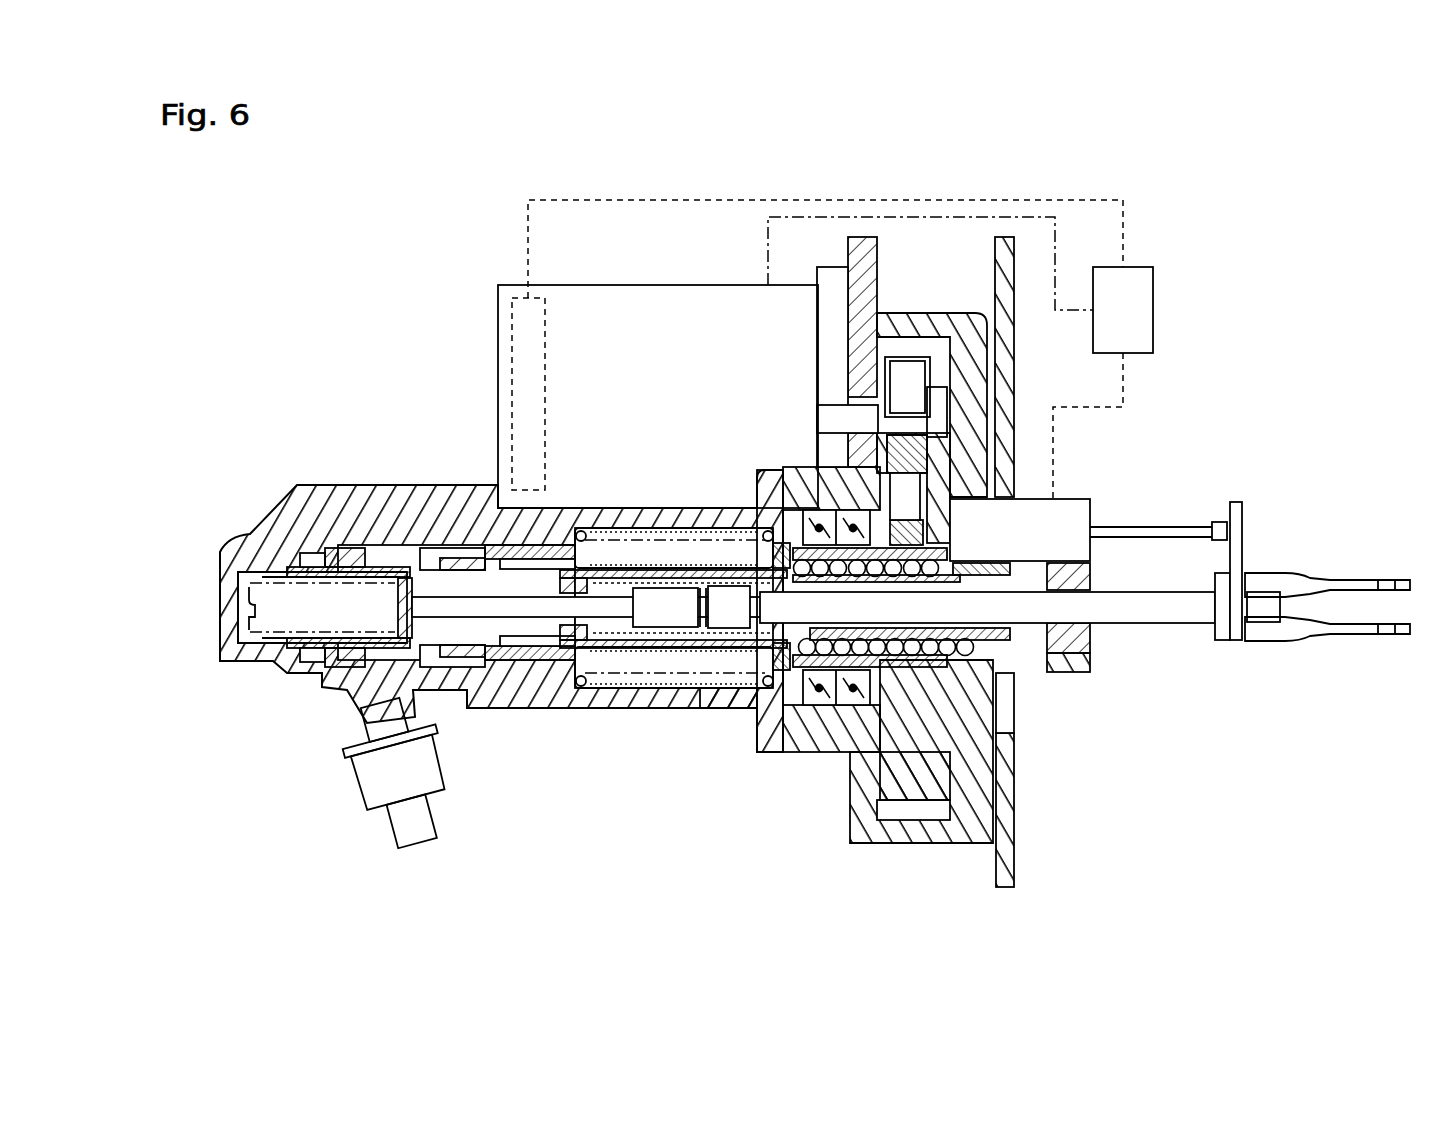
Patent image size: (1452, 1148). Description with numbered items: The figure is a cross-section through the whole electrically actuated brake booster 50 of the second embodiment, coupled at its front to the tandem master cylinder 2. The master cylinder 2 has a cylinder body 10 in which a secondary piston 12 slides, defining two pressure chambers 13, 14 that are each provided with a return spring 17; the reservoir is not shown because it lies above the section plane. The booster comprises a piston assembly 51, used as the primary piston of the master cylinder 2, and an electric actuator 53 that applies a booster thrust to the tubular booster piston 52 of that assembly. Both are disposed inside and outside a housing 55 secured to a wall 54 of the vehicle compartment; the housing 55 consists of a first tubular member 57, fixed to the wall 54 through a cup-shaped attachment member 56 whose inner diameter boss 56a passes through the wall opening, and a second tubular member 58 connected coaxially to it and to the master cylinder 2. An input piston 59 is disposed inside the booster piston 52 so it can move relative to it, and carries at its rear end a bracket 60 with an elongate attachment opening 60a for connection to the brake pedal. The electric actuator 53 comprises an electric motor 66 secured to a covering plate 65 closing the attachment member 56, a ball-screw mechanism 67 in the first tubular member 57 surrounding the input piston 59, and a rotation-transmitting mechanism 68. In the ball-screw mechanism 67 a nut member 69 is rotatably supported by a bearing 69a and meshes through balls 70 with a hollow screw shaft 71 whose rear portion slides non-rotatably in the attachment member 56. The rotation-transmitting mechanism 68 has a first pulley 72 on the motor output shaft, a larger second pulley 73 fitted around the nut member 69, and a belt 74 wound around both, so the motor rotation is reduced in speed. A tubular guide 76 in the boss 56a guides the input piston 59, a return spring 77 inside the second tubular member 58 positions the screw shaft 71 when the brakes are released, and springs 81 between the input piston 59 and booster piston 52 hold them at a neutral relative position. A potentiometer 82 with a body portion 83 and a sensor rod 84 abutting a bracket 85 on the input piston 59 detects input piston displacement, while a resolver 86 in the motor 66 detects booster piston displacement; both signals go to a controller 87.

The tandem master cylinder 2 is at (266, 413).
The cylinder body 10 is at (370, 495).
The secondary piston 12 is at (362, 555).
The pressure chamber 13 is at (440, 600).
The pressure chamber 14 is at (272, 600).
The return spring 17 is at (350, 702).
The electrically actuated brake booster 50 is at (1165, 223).
The piston assembly 51 is at (672, 560).
The booster piston 52 is at (660, 640).
The electric actuator 53 is at (916, 329).
The wall 54 is at (1015, 845).
The housing 55 is at (763, 756).
The attachment member 56 is at (975, 830).
The inner diameter boss 56a is at (1072, 660).
The first tubular member 57 is at (830, 750).
The second tubular member 58 is at (590, 700).
The input piston 59 is at (1185, 625).
The bracket 60 is at (1325, 635).
The elongate attachment opening 60a is at (1370, 580).
The covering plate 65 is at (862, 240).
The electric motor 66 is at (585, 310).
The ball-screw mechanism 67 is at (830, 720).
The rotation-transmitting mechanism 68 is at (935, 458).
The nut member 69 is at (900, 780).
The bearing 69a is at (790, 515).
The balls 70 is at (930, 790).
The screw shaft 71 is at (1020, 650).
The first pulley 72 is at (945, 370).
The second pulley 73 is at (1012, 762).
The belt 74 is at (910, 498).
The tubular guide 76 is at (1085, 640).
The return spring 77 is at (632, 505).
The springs 81 is at (735, 710).
The potentiometer 82 is at (1148, 524).
The body portion 83 is at (1085, 560).
The sensor rod 84 is at (1215, 525).
The bracket 85 is at (1245, 515).
The resolver 86 is at (518, 325).
The controller 87 is at (1135, 308).